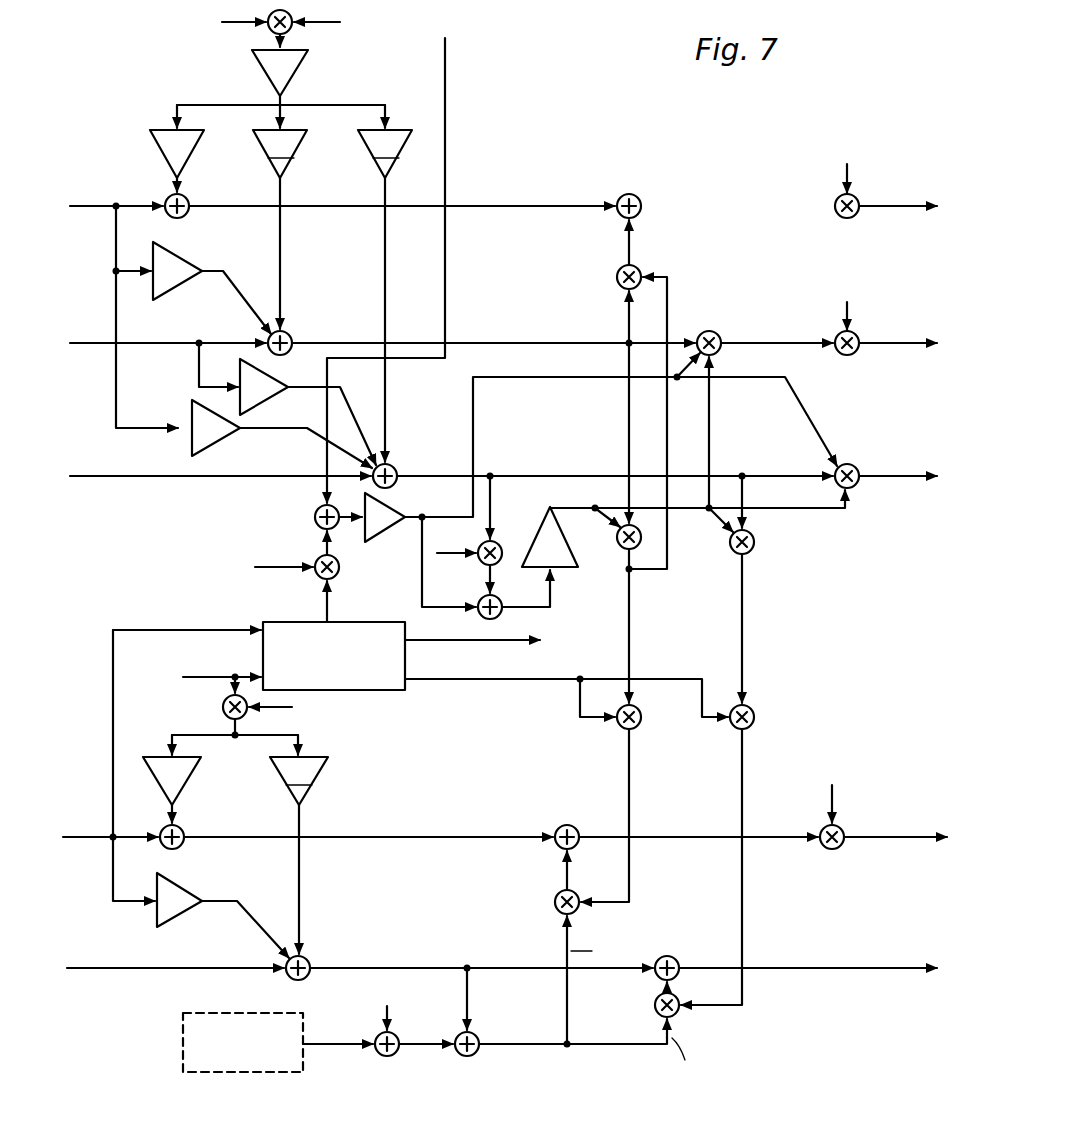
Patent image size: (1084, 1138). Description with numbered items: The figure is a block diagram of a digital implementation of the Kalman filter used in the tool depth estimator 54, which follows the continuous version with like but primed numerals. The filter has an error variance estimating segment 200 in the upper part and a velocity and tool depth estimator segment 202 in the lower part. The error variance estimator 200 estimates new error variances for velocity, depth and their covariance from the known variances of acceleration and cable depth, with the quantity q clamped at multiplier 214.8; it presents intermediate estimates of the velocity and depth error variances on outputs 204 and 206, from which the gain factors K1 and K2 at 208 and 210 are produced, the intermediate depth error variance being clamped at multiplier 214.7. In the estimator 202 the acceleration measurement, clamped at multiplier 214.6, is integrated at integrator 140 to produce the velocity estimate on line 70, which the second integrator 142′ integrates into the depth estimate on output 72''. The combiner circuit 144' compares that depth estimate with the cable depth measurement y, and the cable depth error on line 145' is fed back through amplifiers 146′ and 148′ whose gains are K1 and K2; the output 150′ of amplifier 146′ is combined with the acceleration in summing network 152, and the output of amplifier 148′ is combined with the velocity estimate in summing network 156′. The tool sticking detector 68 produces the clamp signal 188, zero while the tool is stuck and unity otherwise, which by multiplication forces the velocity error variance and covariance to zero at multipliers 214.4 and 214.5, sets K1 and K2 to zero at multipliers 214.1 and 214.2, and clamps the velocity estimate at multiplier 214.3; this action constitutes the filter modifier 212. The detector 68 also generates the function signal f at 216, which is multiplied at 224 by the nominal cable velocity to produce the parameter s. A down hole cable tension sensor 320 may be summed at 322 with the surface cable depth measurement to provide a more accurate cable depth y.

The tool depth estimator 54 is at (705, 150).
The error variance estimating segment 200 is at (538, 288).
The velocity and tool depth estimator segment 202 is at (470, 803).
The multiplier 214.8 is at (293, 33).
The clamp signal 188 is at (850, 175).
The multiplier 214.4 is at (835, 218).
The multiplier 214.5 is at (835, 332).
The intermediate velocity error variance signal 204 is at (627, 420).
The intermediate depth error variance signal 206 is at (783, 477).
The multiplier 214.7 is at (490, 568).
The filter modifier 212 is at (186, 558).
The multiplier 224 is at (340, 565).
The function signal f 216 is at (331, 606).
The tool sticking detector 68 is at (268, 622).
The gain factor K1 208 is at (631, 614).
The gain factor K2 210 is at (744, 608).
The multiplier 214.6 is at (222, 710).
The multiplier 214.1 is at (641, 727).
The multiplier 214.2 is at (755, 722).
The integrator 140 is at (190, 806).
The summing network 152 is at (572, 826).
The tool velocity estimate line 70 is at (870, 836).
The output of amplifier 150′ is at (560, 881).
The second integrator 142′ is at (320, 955).
The amplifier 146′ is at (556, 909).
The summing network 156′ is at (678, 955).
The tool depth estimate output 72'' is at (810, 965).
The combiner circuit 144' is at (448, 1012).
The cable depth error line 145' is at (573, 1030).
The amplifier 148' is at (669, 902).
The down hole cable tension sensor 320 is at (250, 1074).
The summer 322 is at (377, 1056).
The multiplier 214.3 is at (857, 850).